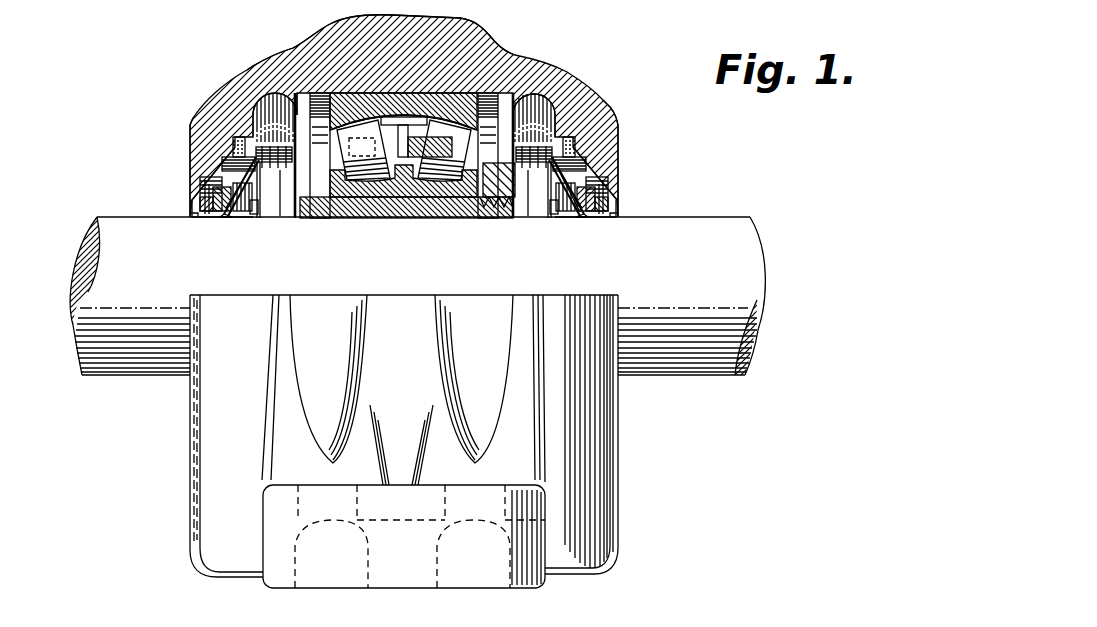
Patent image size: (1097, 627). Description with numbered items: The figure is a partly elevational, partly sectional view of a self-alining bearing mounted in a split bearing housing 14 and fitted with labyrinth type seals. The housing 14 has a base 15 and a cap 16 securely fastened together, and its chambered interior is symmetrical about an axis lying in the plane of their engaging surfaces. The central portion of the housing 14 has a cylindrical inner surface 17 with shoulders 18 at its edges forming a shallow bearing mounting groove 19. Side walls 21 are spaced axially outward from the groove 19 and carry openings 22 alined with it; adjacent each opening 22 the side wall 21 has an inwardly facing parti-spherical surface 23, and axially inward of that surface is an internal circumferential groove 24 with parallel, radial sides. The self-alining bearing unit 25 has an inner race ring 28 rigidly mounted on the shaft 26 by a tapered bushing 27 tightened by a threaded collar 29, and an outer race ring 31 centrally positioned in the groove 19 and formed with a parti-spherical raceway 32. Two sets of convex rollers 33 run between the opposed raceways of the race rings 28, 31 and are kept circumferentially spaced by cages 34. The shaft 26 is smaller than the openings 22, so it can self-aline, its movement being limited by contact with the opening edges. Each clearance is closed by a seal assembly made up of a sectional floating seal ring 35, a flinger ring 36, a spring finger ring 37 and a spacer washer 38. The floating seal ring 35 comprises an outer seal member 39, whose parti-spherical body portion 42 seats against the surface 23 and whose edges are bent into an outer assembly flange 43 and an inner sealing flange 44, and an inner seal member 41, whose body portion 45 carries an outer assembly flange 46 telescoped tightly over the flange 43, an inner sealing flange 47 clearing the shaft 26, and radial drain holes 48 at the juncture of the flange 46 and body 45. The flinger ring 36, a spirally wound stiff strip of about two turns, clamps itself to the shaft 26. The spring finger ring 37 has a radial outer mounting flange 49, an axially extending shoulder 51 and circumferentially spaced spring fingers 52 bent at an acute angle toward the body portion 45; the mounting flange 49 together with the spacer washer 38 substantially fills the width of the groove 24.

The split bearing housing 14 is at (624, 455).
The base 15 is at (597, 503).
The cap 16 is at (533, 57).
The cylindrical inner surface 17 is at (487, 90).
The shoulders 18 is at (303, 100).
The bearing mounting groove 19 is at (343, 92).
The side walls 21 is at (193, 150).
The openings 22 is at (190, 197).
The parti-spherical surface 23 is at (217, 163).
The internal circumferential groove 24 is at (242, 143).
The self-alining bearing unit 25 is at (433, 95).
The shaft 26 is at (683, 366).
The tapered bushing 27 is at (383, 210).
The inner race ring 28 is at (438, 196).
The threaded collar 29 is at (500, 198).
The outer race ring 31 is at (360, 96).
The parti-spherical raceway 32 is at (410, 116).
The convex rollers 33 is at (402, 149).
The cages 34 is at (416, 137).
The sectional floating seal ring 35 is at (182, 215).
The flinger ring 36 is at (200, 200).
The spring finger ring 37 is at (263, 209).
The spacer washer 38 is at (261, 128).
The outer seal member 39 is at (203, 190).
The inner seal member 41 is at (220, 218).
The parti-spherical body portion 42 is at (187, 205).
The outer assembly flange 43 is at (217, 180).
The inner sealing flange 44 is at (207, 218).
The body portion 45 is at (261, 183).
The outer assembly flange 46 is at (257, 154).
The inner sealing flange 47 is at (233, 218).
The drain holes 48 is at (259, 163).
The outer mounting flange 49 is at (235, 142).
The shoulder 51 is at (550, 158).
The spring fingers 52 is at (252, 218).